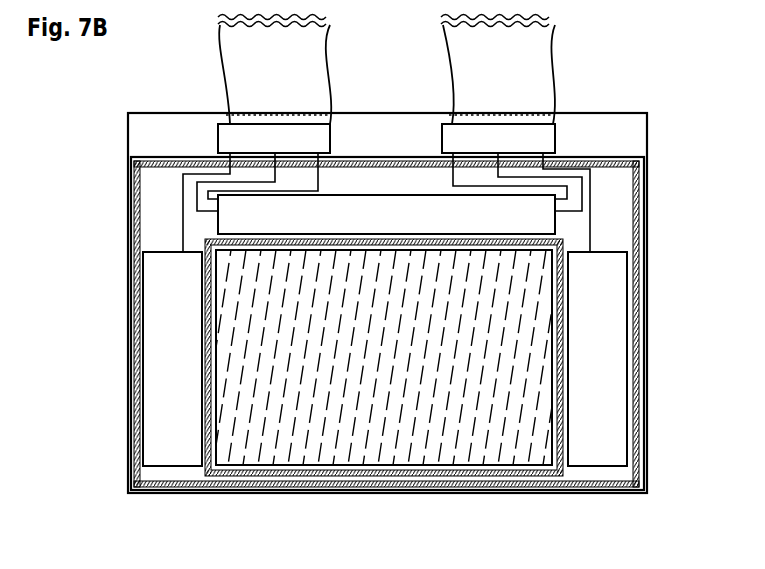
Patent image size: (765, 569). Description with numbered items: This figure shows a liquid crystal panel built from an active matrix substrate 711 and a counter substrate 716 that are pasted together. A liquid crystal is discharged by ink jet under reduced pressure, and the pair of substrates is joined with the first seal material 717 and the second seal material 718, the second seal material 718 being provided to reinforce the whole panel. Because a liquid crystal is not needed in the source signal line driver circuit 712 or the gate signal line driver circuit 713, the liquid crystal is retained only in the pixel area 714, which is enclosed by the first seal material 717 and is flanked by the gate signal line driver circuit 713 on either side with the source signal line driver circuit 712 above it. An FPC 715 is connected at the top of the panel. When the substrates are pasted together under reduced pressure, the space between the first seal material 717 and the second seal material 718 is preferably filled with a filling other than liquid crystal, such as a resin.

The active matrix substrate 711 is at (178, 140).
The source signal line driver circuit 712 is at (386, 214).
The gate signal line driver circuit 713 is at (385, 359).
The pixel area 714 is at (307, 453).
The FPC 715 is at (386, 134).
The counter substrate 716 is at (192, 474).
The first seal material 717 is at (443, 485).
The second seal material 718 is at (637, 283).